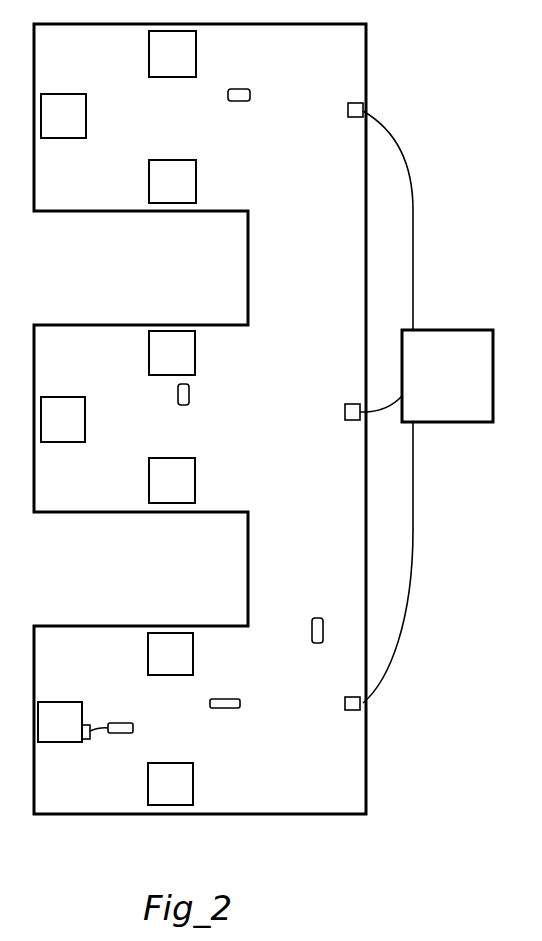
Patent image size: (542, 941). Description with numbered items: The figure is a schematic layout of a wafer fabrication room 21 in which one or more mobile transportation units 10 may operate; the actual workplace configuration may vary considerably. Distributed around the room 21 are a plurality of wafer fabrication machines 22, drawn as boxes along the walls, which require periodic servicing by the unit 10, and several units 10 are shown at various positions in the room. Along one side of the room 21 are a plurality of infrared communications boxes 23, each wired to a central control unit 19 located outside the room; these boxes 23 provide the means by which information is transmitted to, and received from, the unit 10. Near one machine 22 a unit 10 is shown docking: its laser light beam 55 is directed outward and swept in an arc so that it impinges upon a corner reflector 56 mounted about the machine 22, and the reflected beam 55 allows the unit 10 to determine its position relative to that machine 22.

The transportation unit 10 is at (243, 89).
The central control unit 19 is at (458, 387).
The wafer fabrication room 21 is at (322, 815).
The wafer fabrication machine 22 is at (184, 66).
The infrared communications box 23 is at (348, 111).
The light beam 55 is at (96, 733).
The corner reflector 56 is at (88, 725).